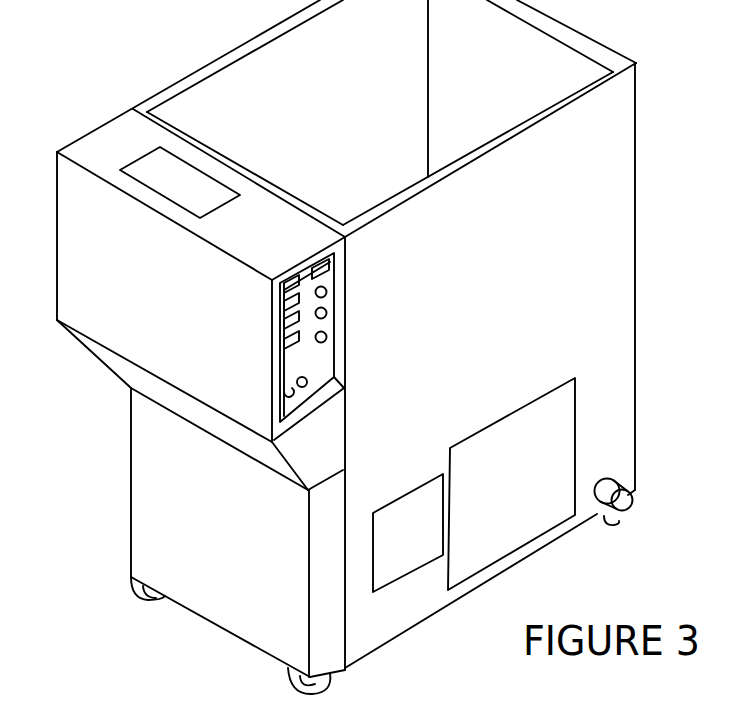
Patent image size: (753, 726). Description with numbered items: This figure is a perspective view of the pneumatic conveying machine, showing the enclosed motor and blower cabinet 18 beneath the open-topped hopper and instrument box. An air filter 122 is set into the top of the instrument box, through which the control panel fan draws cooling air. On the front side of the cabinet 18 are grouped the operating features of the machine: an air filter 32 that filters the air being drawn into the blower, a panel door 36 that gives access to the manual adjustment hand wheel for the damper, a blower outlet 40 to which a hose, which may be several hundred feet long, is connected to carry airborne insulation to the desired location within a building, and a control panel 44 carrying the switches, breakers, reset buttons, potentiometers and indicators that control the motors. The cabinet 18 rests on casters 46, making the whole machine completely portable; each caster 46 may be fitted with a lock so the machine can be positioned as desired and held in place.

The motor and blower cabinet 18 is at (618, 222).
The air filter 122 is at (157, 168).
The control panel 44 is at (317, 368).
The air filter 32 is at (558, 443).
The panel door 36 is at (395, 555).
The blower outlet 40 is at (623, 498).
The casters 46 is at (613, 521).